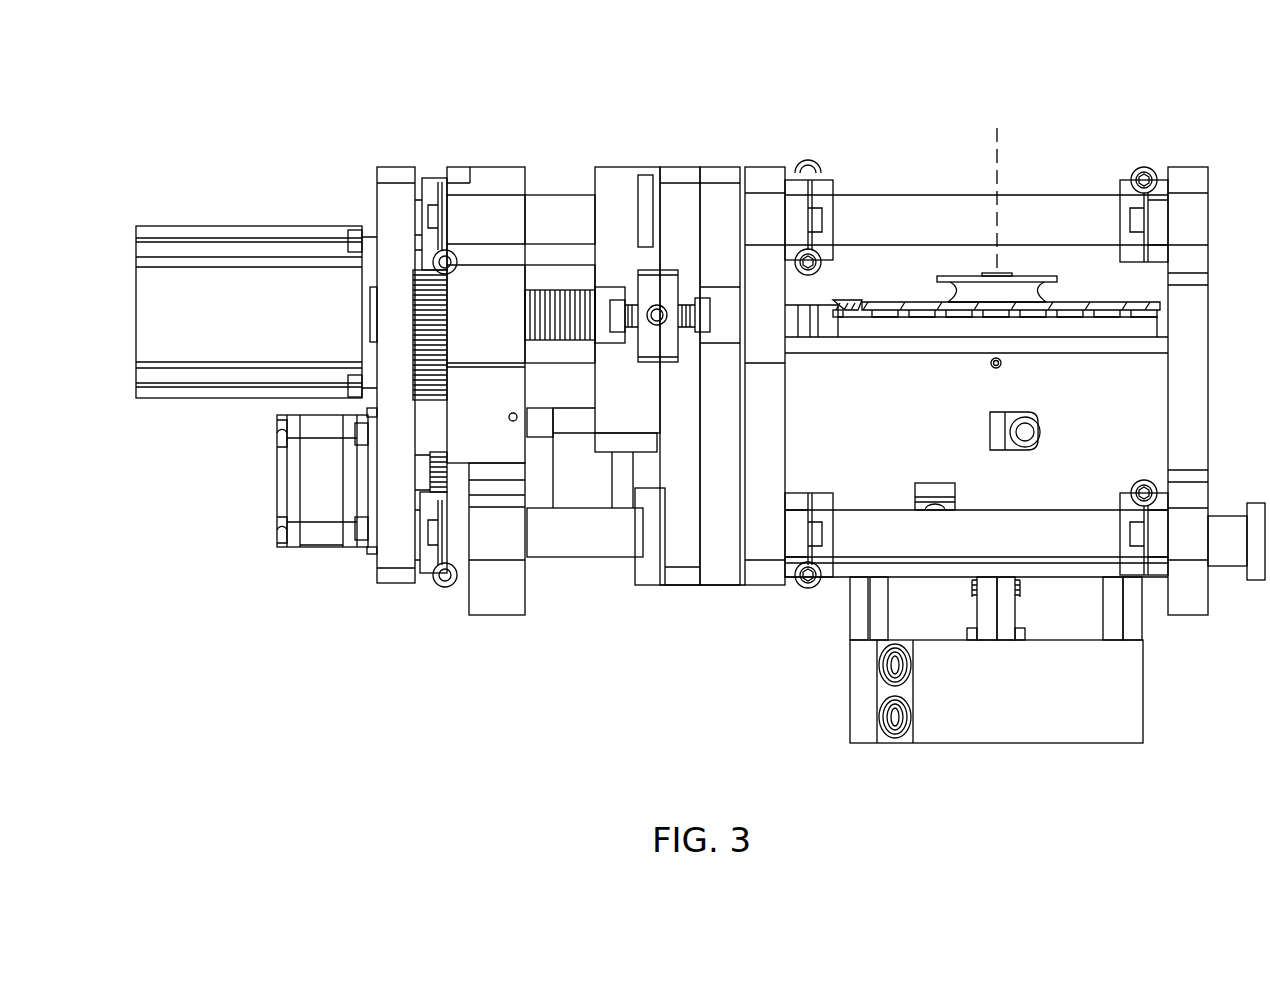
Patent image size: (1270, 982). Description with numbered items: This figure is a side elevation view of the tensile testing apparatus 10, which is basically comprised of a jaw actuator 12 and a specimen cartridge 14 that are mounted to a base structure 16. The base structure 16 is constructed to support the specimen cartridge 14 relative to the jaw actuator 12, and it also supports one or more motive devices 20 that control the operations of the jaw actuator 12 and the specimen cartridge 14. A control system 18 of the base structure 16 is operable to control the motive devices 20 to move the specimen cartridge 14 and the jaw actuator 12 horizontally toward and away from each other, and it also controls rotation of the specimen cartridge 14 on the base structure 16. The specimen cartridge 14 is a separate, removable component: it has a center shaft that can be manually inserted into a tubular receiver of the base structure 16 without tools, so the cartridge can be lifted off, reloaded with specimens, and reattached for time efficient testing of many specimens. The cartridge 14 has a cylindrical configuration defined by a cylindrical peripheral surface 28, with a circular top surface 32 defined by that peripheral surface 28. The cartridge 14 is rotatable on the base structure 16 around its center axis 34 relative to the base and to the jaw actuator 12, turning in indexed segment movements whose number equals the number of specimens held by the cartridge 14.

The tensile testing apparatus 10 is at (862, 146).
The jaw actuator 12 is at (807, 355).
The specimen cartridge 14 is at (1079, 285).
The base structure 16 is at (551, 622).
The control system 18 is at (442, 630).
The motive devices 20 is at (207, 410).
The cylindrical peripheral surface 28 is at (1163, 317).
The circular top surface 32 is at (905, 301).
The center axis 34 is at (997, 130).